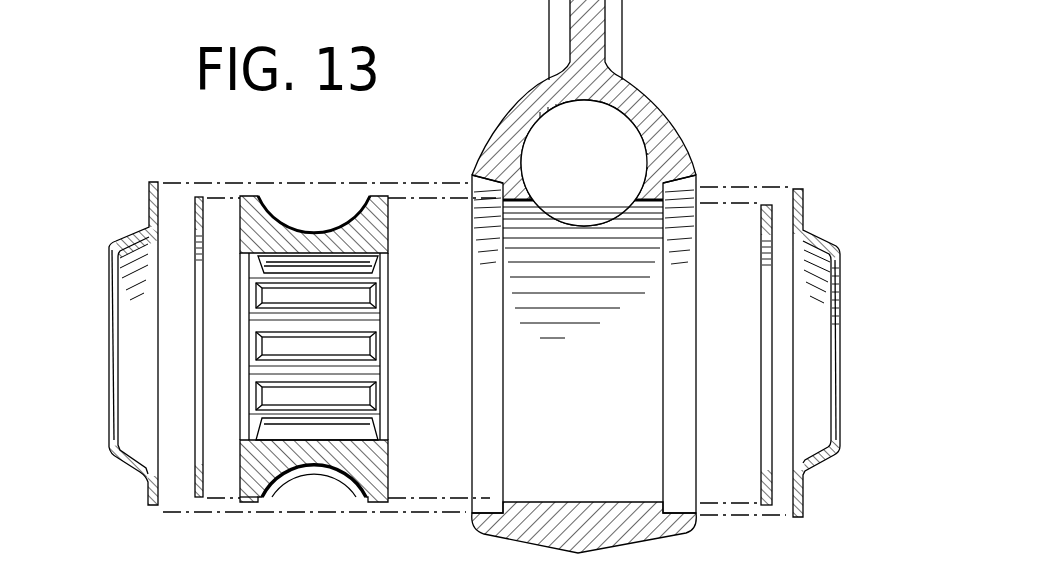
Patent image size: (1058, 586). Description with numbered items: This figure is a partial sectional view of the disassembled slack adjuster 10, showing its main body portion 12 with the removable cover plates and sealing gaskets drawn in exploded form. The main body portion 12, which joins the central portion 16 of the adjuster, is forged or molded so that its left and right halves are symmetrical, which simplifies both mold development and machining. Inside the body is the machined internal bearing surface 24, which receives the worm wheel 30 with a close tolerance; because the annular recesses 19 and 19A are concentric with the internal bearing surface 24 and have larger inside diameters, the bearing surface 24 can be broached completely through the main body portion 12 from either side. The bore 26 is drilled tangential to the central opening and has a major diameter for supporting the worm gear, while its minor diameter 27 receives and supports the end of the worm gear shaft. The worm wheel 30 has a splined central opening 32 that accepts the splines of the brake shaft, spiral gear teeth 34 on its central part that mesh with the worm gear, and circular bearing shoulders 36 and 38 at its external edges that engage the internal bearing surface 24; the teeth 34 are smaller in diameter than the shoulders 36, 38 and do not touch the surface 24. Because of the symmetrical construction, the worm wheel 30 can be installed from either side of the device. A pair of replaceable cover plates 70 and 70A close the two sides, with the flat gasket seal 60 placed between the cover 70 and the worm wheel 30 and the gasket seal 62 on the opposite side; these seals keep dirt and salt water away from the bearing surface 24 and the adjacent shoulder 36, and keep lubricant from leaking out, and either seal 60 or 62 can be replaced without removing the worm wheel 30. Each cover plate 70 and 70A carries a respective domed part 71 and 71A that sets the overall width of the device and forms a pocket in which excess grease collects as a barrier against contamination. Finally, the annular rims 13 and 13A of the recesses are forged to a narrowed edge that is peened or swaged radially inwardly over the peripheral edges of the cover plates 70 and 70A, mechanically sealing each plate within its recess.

The slack adjuster 10 is at (707, 72).
The main body portion 12 is at (522, 535).
The annular rim 13 is at (698, 176).
The annular rim 13A is at (472, 170).
The central portion 16 is at (521, 113).
The annular recess 19 is at (684, 391).
The annular recess 19A is at (482, 405).
The internal bearing surface 24 is at (588, 427).
The bore 26 is at (660, 149).
The minor diameter 27 is at (604, 150).
The worm wheel 30 is at (354, 190).
The central opening 32 is at (364, 347).
The spiral gear teeth 34 is at (293, 207).
The circular bearing shoulder 36 is at (377, 502).
The circular bearing shoulder 38 is at (246, 500).
The flat gasket seal 60 is at (762, 488).
The gasket seal 62 is at (197, 208).
The removable cover plate 70 is at (852, 348).
The removable cover plate 70A is at (119, 212).
The domed part 71 is at (843, 251).
The domed part 71A is at (112, 247).